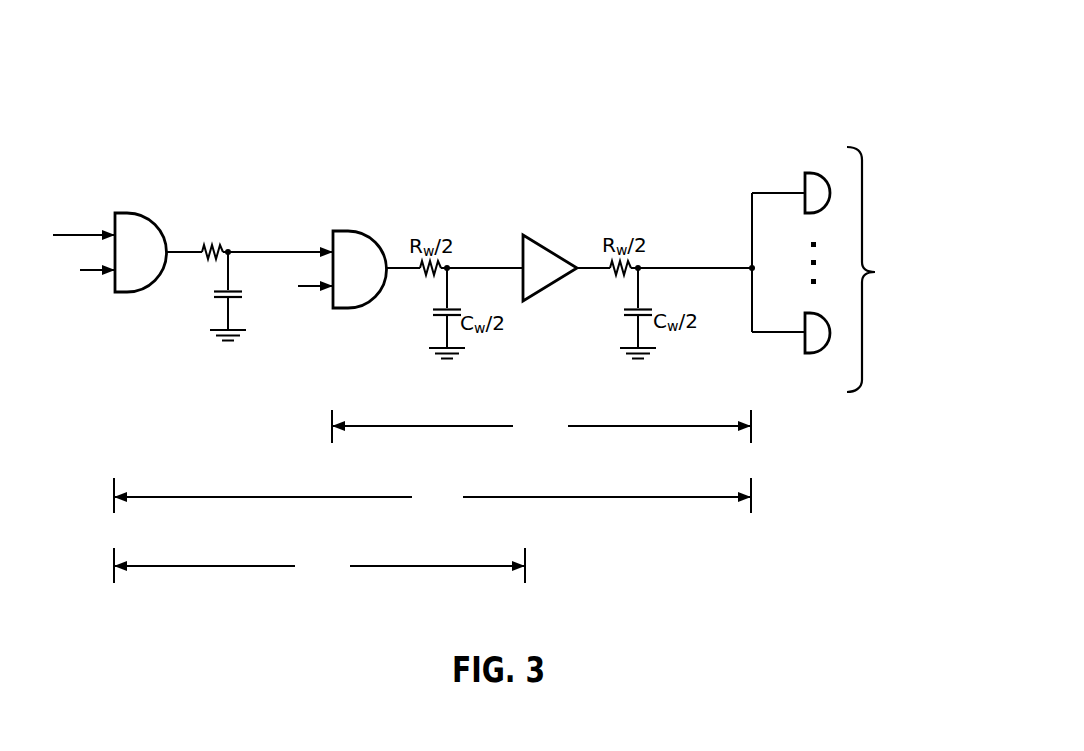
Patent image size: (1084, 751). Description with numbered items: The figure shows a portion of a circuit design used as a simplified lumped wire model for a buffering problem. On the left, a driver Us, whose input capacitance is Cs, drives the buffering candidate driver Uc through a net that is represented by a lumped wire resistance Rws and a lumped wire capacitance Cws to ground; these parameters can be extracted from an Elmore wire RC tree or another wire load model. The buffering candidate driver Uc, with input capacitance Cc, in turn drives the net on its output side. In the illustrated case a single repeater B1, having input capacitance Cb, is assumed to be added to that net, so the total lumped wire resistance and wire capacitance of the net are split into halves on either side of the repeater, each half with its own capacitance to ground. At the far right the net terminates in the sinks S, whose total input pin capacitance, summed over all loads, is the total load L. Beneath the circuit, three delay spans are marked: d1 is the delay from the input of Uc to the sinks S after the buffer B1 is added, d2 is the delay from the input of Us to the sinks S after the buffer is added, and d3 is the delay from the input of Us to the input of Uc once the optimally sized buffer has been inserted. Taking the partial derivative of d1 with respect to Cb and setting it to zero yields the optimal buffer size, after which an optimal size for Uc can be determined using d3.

The driver Us is at (127, 212).
The buffering candidate driver Uc is at (347, 230).
The repeater B1 is at (533, 238).
The input capacitance of Us Cs is at (84, 241).
The lumped wire resistance Rws is at (198, 239).
The lumped wire capacitance Cws is at (221, 296).
The input capacitance of Uc Cc is at (280, 257).
The input capacitance of B1 Cb is at (485, 255).
The total load L is at (681, 267).
The sinks S is at (839, 269).
The delay from input of Uc to sinks d1 is at (541, 426).
The delay from input of Us to sinks d2 is at (432, 495).
The delay from input of Us to input of Uc d3 is at (319, 565).